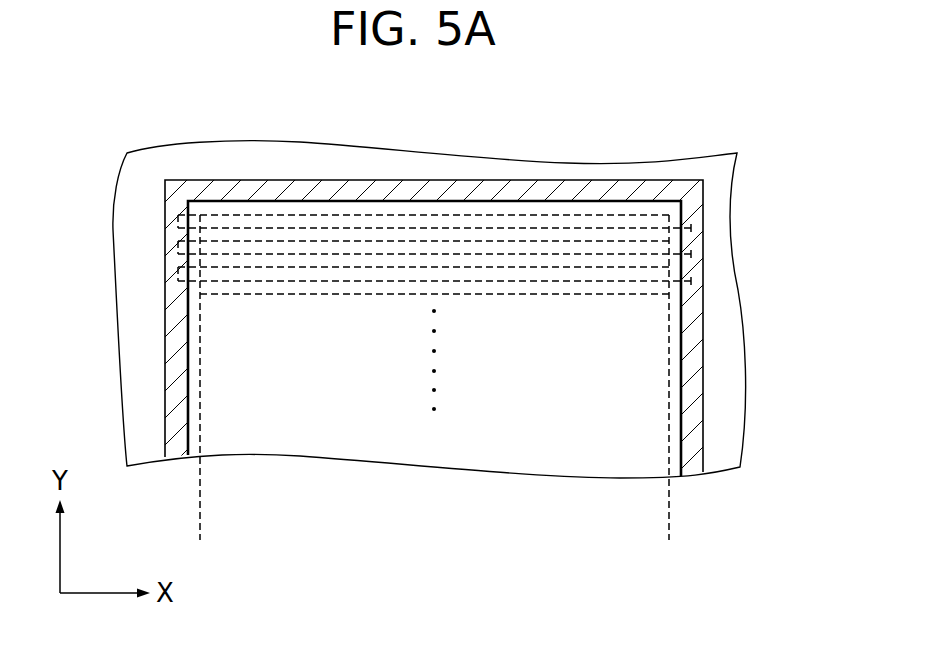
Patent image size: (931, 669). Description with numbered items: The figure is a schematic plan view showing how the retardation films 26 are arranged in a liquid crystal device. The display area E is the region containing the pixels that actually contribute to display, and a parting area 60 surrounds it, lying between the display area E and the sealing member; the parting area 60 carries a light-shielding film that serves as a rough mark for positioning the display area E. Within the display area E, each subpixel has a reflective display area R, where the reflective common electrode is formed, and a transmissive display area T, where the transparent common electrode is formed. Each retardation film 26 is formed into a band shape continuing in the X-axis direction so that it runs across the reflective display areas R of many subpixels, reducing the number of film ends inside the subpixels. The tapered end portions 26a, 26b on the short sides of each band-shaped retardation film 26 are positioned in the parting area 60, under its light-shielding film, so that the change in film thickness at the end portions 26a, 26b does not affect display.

The retardation film 26 is at (573, 220).
The end portion 26a is at (170, 223).
The end portion 26b is at (693, 224).
The parting area 60 is at (690, 335).
The reflective display area R is at (272, 215).
The transmissive display area T is at (517, 227).
The display area E is at (668, 524).